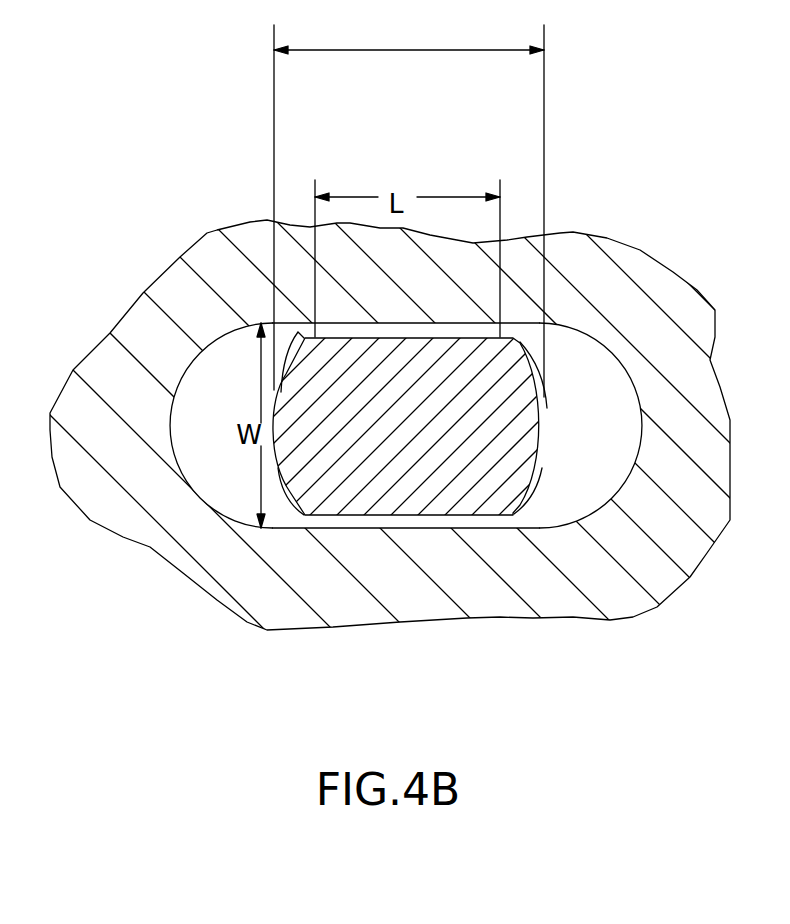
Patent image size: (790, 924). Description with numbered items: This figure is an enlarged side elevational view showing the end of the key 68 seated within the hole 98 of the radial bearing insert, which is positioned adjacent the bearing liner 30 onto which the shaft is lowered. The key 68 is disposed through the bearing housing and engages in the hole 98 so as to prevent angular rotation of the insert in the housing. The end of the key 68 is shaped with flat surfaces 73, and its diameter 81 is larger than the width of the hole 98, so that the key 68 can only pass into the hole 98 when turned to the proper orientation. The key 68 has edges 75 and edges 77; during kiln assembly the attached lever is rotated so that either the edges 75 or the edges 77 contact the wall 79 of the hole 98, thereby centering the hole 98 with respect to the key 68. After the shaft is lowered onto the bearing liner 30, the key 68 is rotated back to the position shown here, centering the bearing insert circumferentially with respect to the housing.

The bearing liner 30 is at (217, 238).
The key 68 is at (483, 487).
The flat surfaces 73 is at (462, 337).
The edges 75 is at (300, 334).
The edges 77 is at (510, 325).
The wall 79 is at (443, 530).
The diameter 81 is at (409, 208).
The hole 98 is at (217, 513).